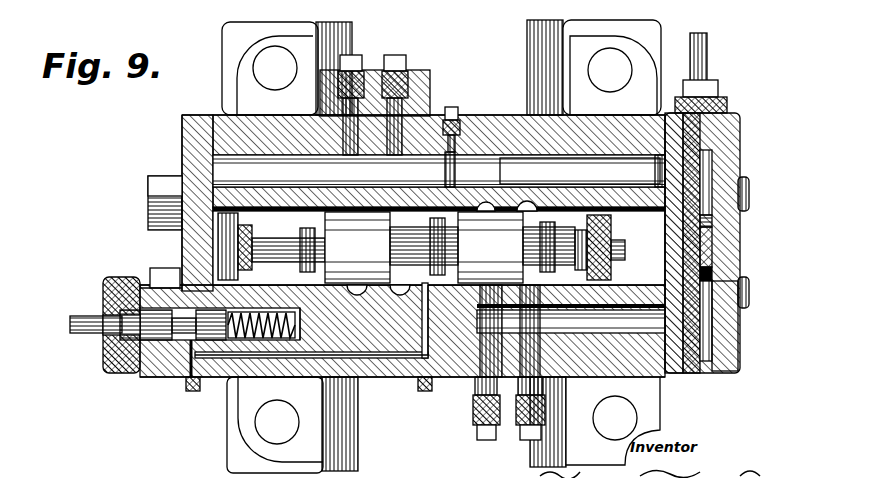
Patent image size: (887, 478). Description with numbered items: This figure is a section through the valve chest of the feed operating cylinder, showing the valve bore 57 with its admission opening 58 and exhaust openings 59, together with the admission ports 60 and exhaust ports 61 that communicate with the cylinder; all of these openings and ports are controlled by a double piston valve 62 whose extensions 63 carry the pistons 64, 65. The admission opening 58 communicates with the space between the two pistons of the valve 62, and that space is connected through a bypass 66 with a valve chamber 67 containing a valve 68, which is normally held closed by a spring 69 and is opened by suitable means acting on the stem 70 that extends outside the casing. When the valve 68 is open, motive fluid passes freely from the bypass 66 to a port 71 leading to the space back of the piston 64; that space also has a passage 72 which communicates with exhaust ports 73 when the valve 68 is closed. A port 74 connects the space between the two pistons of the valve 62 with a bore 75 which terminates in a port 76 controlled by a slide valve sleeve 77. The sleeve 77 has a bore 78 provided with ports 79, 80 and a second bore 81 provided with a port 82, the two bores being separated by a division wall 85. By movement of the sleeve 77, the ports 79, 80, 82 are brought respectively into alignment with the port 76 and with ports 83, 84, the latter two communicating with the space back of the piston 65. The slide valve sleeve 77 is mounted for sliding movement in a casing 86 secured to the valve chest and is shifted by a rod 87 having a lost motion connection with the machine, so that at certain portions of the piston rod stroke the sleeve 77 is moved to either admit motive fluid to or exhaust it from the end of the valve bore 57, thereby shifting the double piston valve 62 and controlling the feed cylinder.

The valve bore 57 is at (432, 284).
The admission opening 58 is at (440, 222).
The exhaust openings 59 is at (297, 214).
The admission ports 60 is at (486, 200).
The exhaust ports 61 is at (352, 213).
The double piston valve 62 is at (424, 247).
The extensions 63 is at (270, 228).
The piston 64 is at (262, 256).
The piston 65 is at (662, 283).
The bypass 66 is at (381, 359).
The valve chamber 67 is at (182, 338).
The valve 68 is at (208, 352).
The spring 69 is at (283, 345).
The stem 70 is at (80, 318).
The port 71 is at (218, 272).
The passage 72 is at (205, 298).
The exhaust ports 73 is at (262, 346).
The port 74 is at (452, 180).
The bore 75 is at (580, 166).
The port 76 is at (666, 160).
The slide valve sleeve 77 is at (712, 160).
The bore 78 is at (704, 205).
The port 79 is at (700, 180).
The port 80 is at (712, 245).
The bore 81 is at (716, 330).
The port 82 is at (706, 308).
The port 83 is at (706, 222).
The port 84 is at (612, 245).
The division wall 85 is at (712, 262).
The casing 86 is at (749, 290).
The rod 87 is at (706, 64).